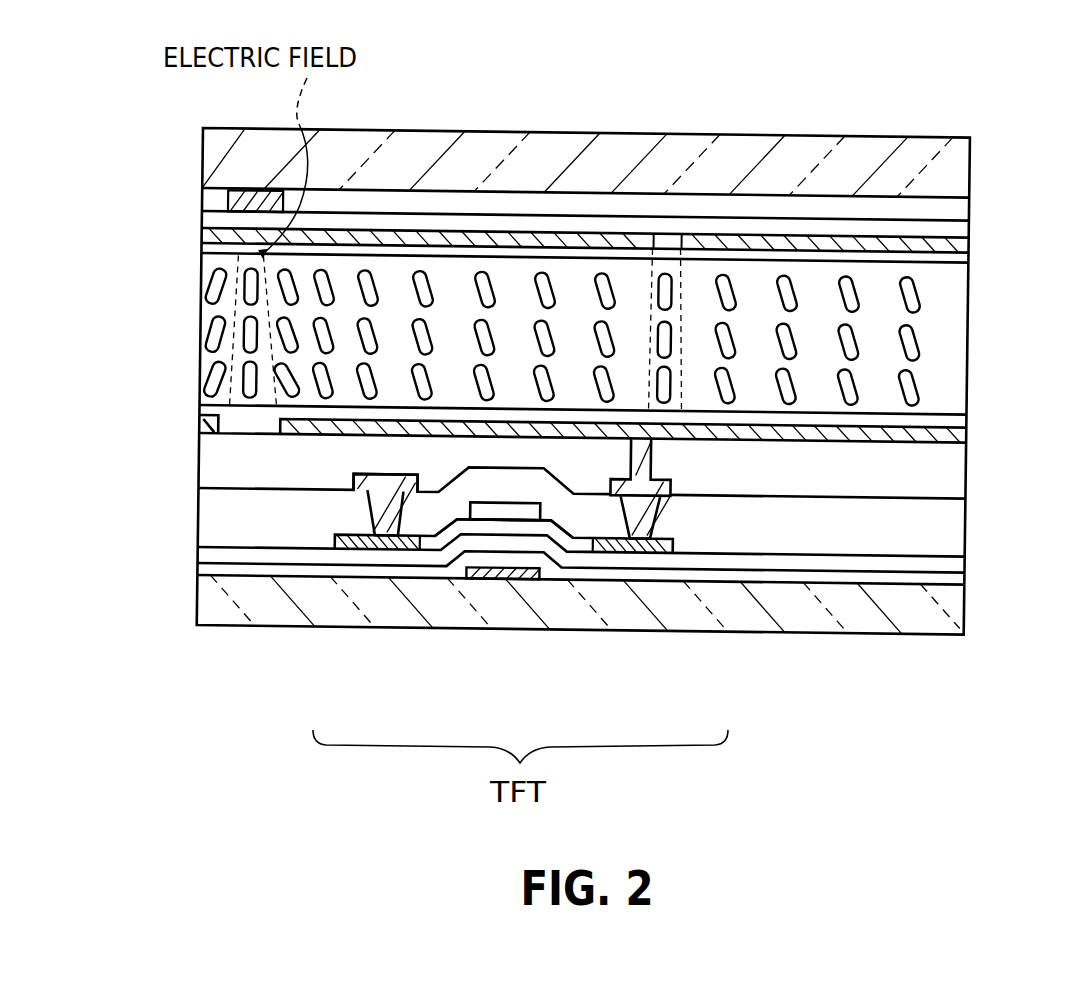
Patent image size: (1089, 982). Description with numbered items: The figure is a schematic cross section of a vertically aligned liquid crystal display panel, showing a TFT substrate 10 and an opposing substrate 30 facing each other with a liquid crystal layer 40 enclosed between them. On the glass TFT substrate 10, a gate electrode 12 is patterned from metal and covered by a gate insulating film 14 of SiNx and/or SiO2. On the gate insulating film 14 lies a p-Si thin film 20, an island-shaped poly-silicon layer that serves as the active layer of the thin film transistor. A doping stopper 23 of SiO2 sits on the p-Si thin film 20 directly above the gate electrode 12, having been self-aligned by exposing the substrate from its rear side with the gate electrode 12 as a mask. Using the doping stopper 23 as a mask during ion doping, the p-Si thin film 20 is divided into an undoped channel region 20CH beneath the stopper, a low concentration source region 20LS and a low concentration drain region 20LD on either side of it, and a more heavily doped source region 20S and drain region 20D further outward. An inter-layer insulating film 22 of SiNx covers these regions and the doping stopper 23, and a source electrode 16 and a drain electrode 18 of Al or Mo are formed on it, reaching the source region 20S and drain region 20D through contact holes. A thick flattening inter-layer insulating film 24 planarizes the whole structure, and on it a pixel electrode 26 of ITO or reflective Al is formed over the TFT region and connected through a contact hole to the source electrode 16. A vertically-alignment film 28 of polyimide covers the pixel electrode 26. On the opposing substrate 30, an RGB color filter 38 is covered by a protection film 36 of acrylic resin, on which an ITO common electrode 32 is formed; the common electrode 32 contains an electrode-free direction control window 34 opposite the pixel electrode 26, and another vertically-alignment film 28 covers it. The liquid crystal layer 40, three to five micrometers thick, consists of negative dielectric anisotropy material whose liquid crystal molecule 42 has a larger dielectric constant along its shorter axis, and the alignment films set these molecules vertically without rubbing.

The TFT substrate 10 is at (225, 614).
The gate electrode 12 is at (503, 579).
The gate insulating film 14 is at (970, 560).
The source electrode 16 is at (672, 483).
The drain electrode 18 is at (377, 476).
The p-Si thin film 20 is at (678, 548).
The drain region 20D is at (352, 549).
The low concentration drain region 20LD is at (448, 556).
The channel region 20CH is at (503, 540).
The low concentration source region 20LS is at (580, 556).
The source region 20S is at (642, 556).
The inter-layer insulating film 22 is at (963, 528).
The doping stopper 23 is at (522, 520).
The flattening inter-layer insulating film 24 is at (957, 480).
The pixel electrode 26 is at (962, 438).
The vertically-alignment film 28 is at (963, 262).
The opposing substrate 30 is at (957, 195).
The common electrode 32 is at (963, 247).
The direction control window 34 is at (668, 244).
The protection film 36 is at (963, 232).
The RGB color filter 38 is at (863, 207).
The liquid crystal layer 40 is at (197, 252).
The liquid crystal molecule 42 is at (278, 398).